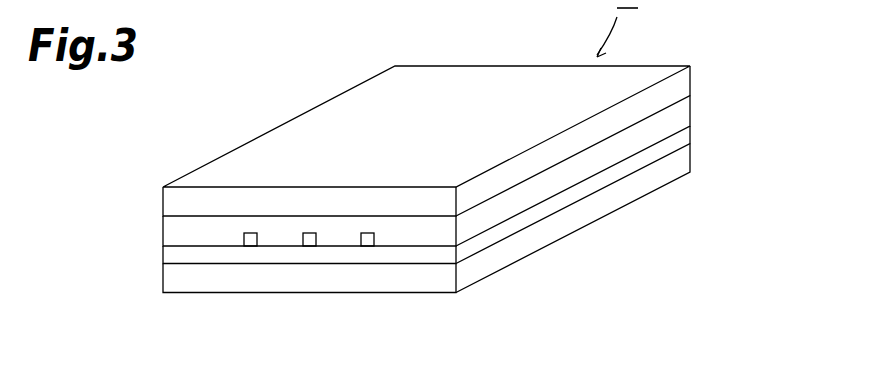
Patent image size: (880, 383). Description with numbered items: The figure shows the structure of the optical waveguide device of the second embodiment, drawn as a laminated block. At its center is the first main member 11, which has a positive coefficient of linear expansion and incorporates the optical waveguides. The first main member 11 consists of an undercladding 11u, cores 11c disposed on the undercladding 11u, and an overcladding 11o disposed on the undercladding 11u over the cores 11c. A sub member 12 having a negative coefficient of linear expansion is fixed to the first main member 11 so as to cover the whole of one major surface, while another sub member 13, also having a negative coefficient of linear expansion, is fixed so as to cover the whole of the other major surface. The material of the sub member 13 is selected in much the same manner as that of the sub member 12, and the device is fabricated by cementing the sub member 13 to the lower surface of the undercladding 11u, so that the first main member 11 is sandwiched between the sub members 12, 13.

The first main member 11 is at (501, 179).
The overcladding 11o is at (690, 110).
The undercladding 11u is at (690, 135).
The cores 11c is at (367, 246).
The sub member 12 is at (690, 83).
The sub member 13 is at (690, 162).